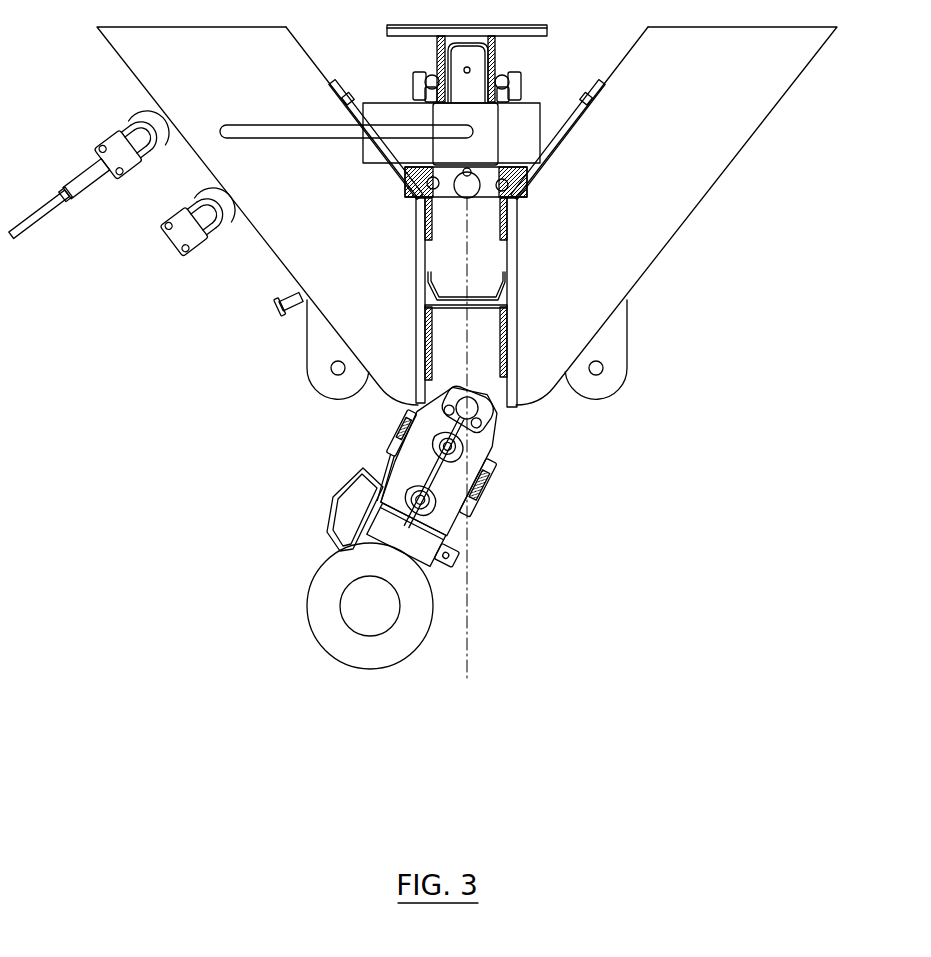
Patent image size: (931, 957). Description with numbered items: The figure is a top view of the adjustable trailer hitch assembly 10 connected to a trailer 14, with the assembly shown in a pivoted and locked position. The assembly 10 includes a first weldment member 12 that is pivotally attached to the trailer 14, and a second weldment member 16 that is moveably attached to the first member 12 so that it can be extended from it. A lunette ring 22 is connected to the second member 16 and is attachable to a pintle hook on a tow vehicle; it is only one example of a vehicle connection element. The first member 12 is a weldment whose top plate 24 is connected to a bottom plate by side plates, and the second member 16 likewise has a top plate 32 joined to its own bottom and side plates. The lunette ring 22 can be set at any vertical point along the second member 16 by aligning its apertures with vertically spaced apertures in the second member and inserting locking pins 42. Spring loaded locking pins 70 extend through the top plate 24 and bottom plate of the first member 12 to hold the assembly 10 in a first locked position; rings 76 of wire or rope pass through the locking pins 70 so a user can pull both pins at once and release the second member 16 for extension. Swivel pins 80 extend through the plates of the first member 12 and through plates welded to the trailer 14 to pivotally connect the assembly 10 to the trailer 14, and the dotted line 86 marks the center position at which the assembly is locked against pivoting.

The adjustable trailer hitch assembly 10 is at (270, 527).
The first weldment member 12 is at (376, 435).
The trailer 14 is at (672, 168).
The second weldment member 16 is at (450, 578).
The lunette ring 22 is at (340, 636).
The top plate 24 is at (483, 442).
The top plate 32 is at (393, 532).
The locking pins 42 is at (458, 556).
The spring loaded locking pins 70 is at (380, 483).
The rings 76 is at (447, 477).
The swivel pins 80 is at (490, 385).
The dotted line 86 is at (472, 666).